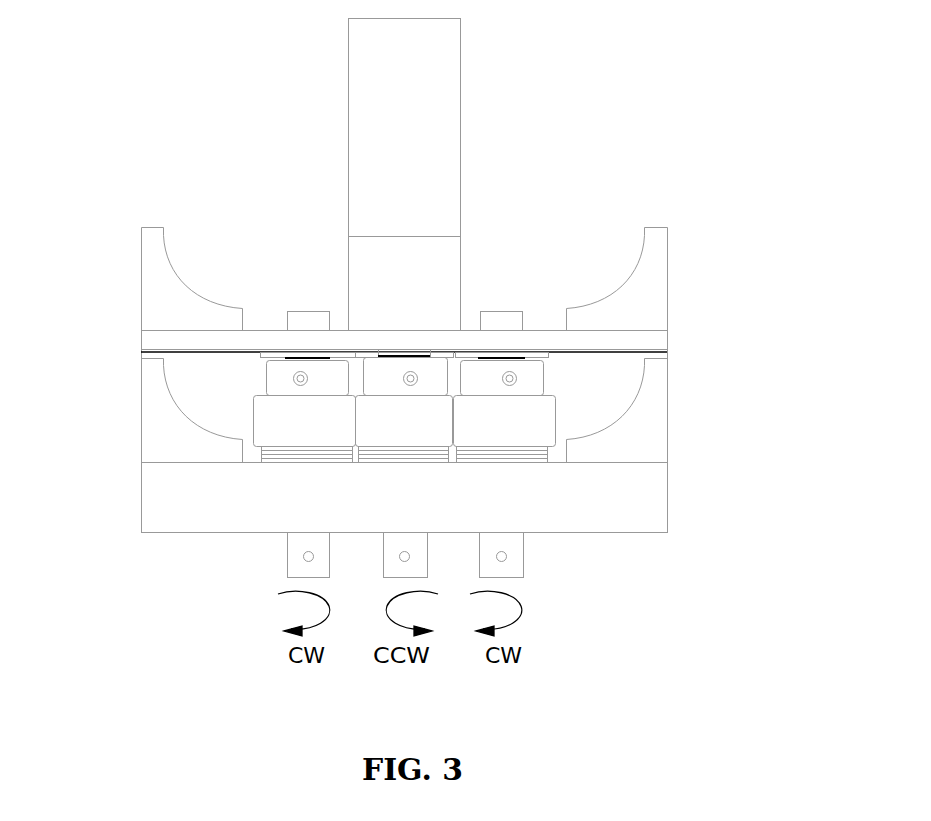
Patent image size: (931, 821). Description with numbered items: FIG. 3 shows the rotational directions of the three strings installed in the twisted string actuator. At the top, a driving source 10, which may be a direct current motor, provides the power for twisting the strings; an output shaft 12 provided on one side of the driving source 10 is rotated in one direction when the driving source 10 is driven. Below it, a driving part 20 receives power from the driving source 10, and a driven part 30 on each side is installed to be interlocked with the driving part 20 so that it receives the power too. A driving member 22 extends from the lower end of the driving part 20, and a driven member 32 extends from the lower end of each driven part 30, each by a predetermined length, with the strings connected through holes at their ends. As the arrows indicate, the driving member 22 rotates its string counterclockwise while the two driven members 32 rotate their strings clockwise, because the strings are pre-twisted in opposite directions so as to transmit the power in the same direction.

The driving source 10 is at (443, 96).
The output shaft 12 is at (413, 355).
The driving part 20 is at (422, 412).
The driven part 30 is at (267, 420).
The driven member 32 is at (295, 545).
The driving member 22 is at (387, 563).